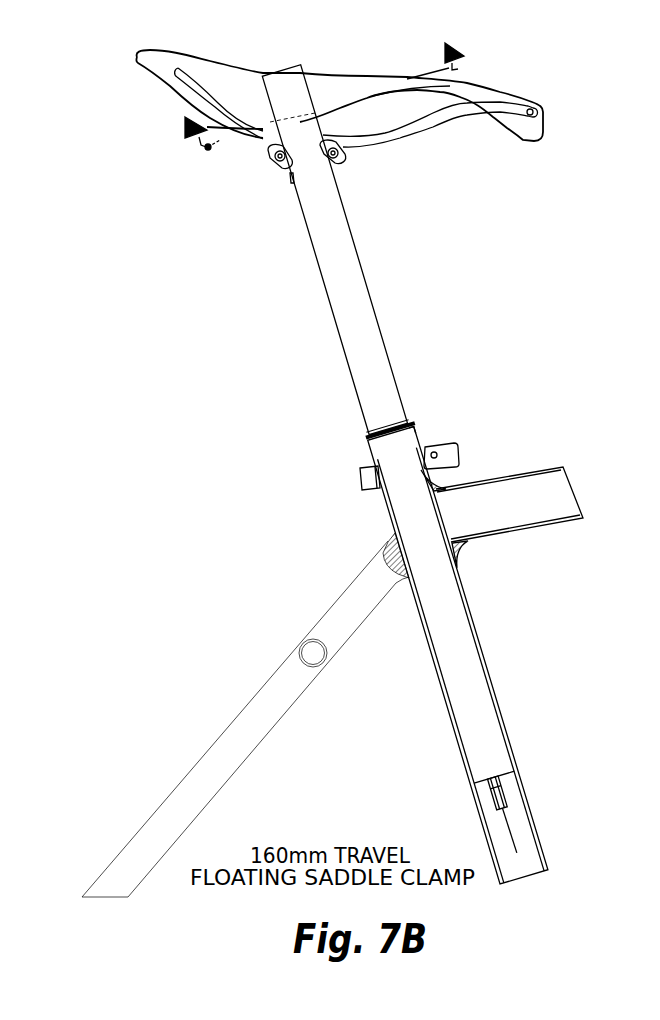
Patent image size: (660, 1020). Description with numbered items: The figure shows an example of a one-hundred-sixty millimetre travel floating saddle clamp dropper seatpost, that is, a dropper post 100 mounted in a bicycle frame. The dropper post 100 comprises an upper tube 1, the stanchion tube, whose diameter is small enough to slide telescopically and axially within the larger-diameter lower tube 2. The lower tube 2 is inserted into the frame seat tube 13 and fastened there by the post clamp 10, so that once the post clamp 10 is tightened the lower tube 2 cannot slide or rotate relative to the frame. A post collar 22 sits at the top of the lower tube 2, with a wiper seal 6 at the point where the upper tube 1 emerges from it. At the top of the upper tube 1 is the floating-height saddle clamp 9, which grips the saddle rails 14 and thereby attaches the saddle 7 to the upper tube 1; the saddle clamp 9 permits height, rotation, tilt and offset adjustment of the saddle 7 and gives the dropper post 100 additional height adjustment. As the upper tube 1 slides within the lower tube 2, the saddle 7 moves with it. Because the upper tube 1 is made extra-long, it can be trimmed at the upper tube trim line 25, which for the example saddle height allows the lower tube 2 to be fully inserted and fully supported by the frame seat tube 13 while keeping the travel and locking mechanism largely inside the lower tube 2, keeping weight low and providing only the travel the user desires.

The dropper post 100 is at (383, 240).
The upper tube 1 is at (349, 218).
The lower tube 2 is at (423, 446).
The wiper seal 6 is at (408, 425).
The saddle 7 is at (545, 122).
The saddle clamp 9 is at (343, 165).
The post clamp 10 is at (456, 446).
The frame seat tube 13 is at (539, 825).
The saddle rails 14 is at (418, 134).
The post collar 22 is at (420, 429).
The upper tube trim line 25 is at (208, 147).